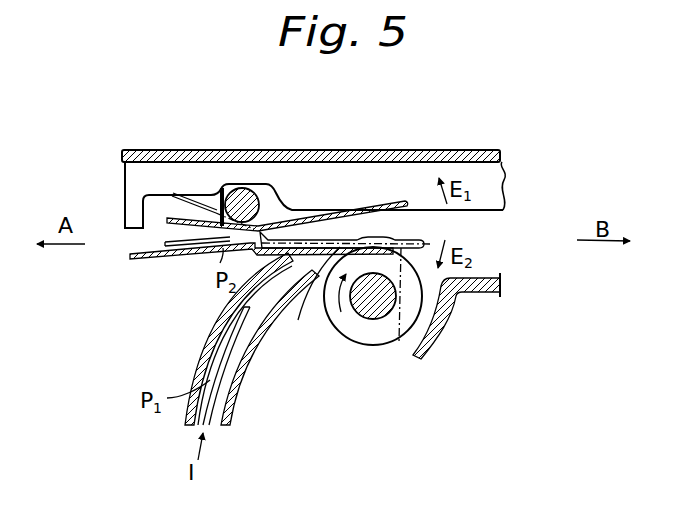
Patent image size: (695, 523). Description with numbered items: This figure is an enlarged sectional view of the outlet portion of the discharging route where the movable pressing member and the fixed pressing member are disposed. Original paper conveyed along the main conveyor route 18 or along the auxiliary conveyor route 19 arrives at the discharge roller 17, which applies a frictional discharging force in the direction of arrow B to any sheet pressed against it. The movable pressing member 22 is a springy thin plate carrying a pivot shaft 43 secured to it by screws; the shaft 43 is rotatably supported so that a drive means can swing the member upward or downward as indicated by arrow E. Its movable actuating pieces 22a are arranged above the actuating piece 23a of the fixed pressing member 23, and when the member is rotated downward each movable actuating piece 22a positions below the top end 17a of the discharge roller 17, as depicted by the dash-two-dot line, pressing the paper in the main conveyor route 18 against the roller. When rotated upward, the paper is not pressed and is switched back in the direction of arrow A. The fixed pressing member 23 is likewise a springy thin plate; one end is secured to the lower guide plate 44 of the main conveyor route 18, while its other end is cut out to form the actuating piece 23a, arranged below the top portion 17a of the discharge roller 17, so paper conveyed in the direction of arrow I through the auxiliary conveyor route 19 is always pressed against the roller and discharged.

The discharge roller 17 is at (372, 346).
The top portion of the discharge roller 17a is at (385, 247).
The main conveyor route 18 is at (150, 240).
The auxiliary conveyor route 19 is at (210, 360).
The movable pressing member 22 is at (170, 208).
The movable actuating piece 22a is at (380, 205).
The fixed pressing member 23 is at (318, 272).
The actuating piece 23a is at (449, 319).
The pivot shaft 43 is at (244, 188).
The lower guide plate 44 is at (167, 257).